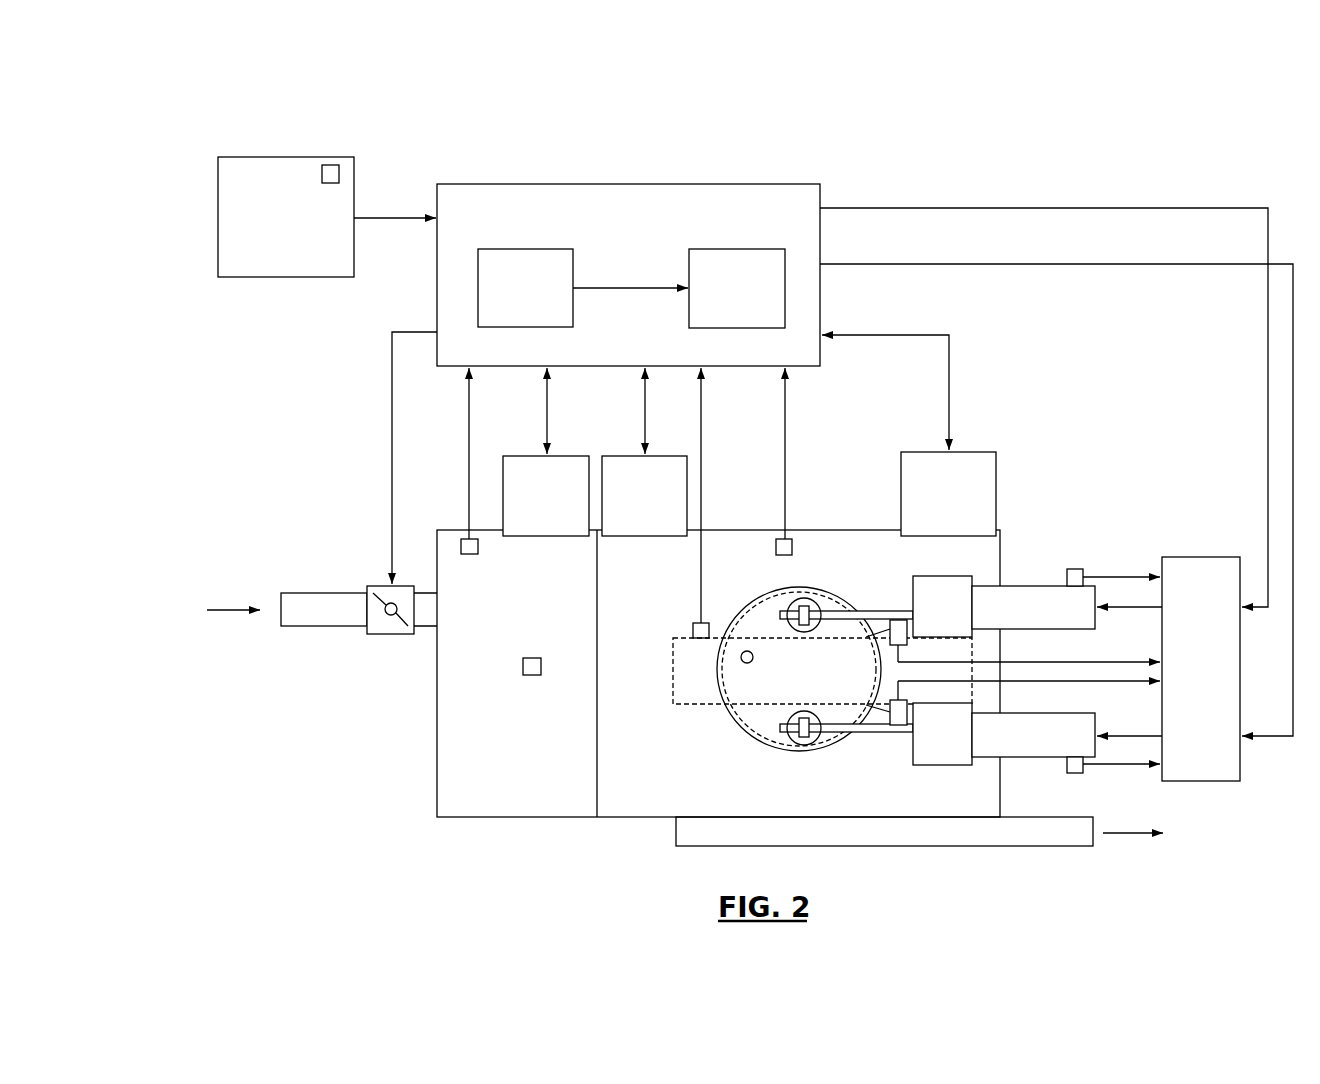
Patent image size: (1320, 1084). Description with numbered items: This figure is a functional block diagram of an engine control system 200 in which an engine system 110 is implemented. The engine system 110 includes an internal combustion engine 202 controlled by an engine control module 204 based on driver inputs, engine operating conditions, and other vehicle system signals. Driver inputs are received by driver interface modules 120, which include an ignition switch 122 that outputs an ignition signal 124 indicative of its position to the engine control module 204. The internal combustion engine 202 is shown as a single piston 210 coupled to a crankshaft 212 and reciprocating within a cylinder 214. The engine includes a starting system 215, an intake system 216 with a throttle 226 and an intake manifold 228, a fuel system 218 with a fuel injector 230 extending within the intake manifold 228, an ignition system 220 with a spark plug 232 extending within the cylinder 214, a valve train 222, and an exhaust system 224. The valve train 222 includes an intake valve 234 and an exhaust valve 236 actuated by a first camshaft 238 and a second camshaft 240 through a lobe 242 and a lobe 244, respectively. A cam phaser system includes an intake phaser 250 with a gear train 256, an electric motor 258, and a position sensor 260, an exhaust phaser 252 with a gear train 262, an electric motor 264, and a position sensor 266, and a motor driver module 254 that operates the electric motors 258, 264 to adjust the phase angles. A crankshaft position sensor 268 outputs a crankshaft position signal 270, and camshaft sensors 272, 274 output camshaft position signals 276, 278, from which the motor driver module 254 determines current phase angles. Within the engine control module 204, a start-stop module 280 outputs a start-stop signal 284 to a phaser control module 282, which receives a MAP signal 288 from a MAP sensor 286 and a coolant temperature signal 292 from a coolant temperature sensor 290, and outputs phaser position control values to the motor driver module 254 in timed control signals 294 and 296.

The engine control system 200 is at (191, 92).
The engine system 110 is at (324, 337).
The driver interface modules 120 is at (285, 157).
The ignition switch 122 is at (330, 165).
The ignition signal 124 is at (375, 218).
The engine control module 204 is at (630, 184).
The start-stop module 280 is at (525, 249).
The phaser control module 282 is at (740, 249).
The start-stop signal 284 is at (605, 288).
The timed control signal 294 is at (860, 208).
The timed control signal 296 is at (860, 264).
The internal combustion engine 202 is at (436, 701).
The intake manifold 228 is at (436, 773).
The starting system 215 is at (912, 452).
The fuel system 218 is at (515, 456).
The ignition system 220 is at (614, 456).
The MAP signal 288 is at (468, 435).
The MAP sensor 286 is at (461, 540).
The crankshaft position signal 270 is at (703, 437).
The coolant temperature signal 292 is at (787, 437).
The coolant temperature sensor 290 is at (793, 535).
The crankshaft position sensor 268 is at (695, 623).
The intake system 216 is at (297, 593).
The throttle 226 is at (375, 586).
The fuel injector 230 is at (530, 658).
The crankshaft 212 is at (673, 670).
The cylinder 214 is at (728, 722).
The piston 210 is at (765, 745).
The spark plug 232 is at (741, 660).
The valve train 222 is at (812, 611).
The intake valve 234 is at (804, 598).
The exhaust valve 236 is at (805, 745).
The first camshaft 238 is at (898, 611).
The second camshaft 240 is at (898, 733).
The lobe 242 is at (805, 632).
The lobe 244 is at (805, 710).
The camshaft sensor 272 is at (867, 639).
The camshaft sensor 274 is at (867, 705).
The camshaft position signal 276 is at (1020, 662).
The camshaft position signal 278 is at (1020, 681).
The intake phaser 250 is at (920, 576).
The exhaust phaser 252 is at (920, 765).
The gear train 256 is at (948, 576).
The gear train 262 is at (948, 765).
The motor driver module 254 is at (1200, 557).
The position sensor 260 is at (1085, 569).
The position sensor 266 is at (1085, 773).
The electric motor 258 is at (1097, 622).
The electric motor 264 is at (1097, 715).
The exhaust system 224 is at (882, 846).